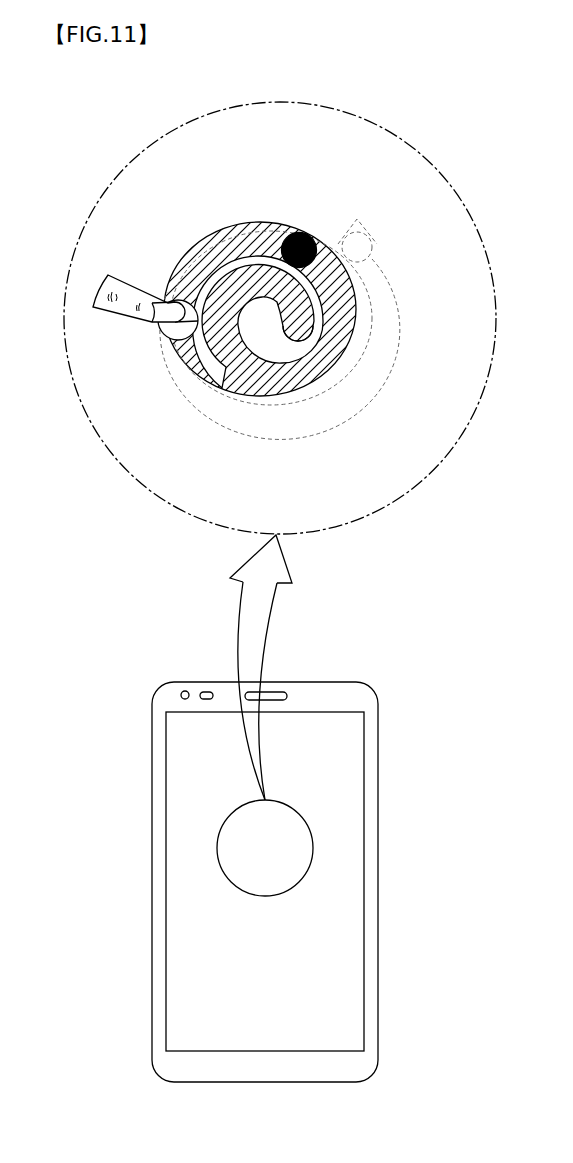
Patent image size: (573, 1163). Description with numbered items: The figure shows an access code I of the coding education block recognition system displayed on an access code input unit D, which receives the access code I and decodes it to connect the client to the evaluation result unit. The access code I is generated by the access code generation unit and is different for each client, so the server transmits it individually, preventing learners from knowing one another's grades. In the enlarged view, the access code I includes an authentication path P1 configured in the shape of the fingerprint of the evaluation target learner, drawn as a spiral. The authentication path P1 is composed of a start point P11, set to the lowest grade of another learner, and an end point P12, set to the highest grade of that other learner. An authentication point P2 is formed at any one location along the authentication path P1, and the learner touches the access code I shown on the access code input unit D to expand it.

The authentication path P1 is at (258, 222).
The authentication point P2 is at (307, 232).
The start point P11 is at (288, 311).
The end point P12 is at (378, 255).
The access code input unit D is at (152, 774).
The access code I is at (217, 850).